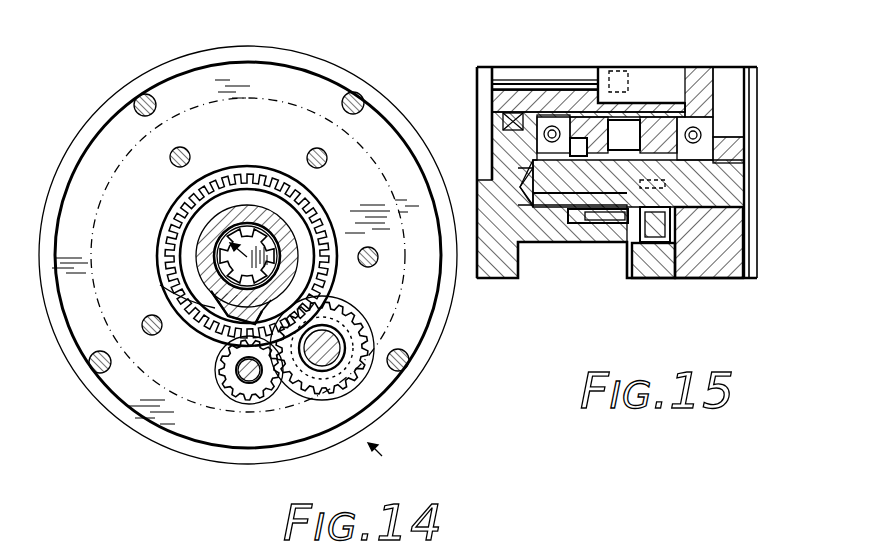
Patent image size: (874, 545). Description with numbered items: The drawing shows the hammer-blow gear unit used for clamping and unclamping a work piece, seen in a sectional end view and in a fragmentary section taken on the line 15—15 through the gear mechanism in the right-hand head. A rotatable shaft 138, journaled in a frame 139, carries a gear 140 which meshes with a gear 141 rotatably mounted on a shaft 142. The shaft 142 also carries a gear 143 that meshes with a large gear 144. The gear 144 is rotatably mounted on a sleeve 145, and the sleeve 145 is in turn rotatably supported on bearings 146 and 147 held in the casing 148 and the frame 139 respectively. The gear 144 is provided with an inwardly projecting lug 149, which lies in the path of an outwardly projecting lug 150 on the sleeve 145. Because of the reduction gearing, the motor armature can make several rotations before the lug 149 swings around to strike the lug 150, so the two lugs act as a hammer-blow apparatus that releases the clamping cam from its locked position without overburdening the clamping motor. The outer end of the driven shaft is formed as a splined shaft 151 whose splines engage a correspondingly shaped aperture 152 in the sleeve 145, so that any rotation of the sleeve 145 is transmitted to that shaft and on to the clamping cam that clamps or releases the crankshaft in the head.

In FIG. 14, the line 15— 15 is at (318, 355).
In FIG. 14, the rotatable shaft 138 is at (240, 378).
In FIG. 15, the frame 139 is at (717, 263).
In FIG. 14, the gear 140 is at (258, 392).
In FIG. 15, the gear 140 is at (637, 217).
In FIG. 14, the gear 141 is at (343, 312).
In FIG. 15, the gear 141 is at (657, 257).
In FIG. 14, the shaft 142 is at (323, 342).
In FIG. 15, the shaft 142 is at (720, 185).
In FIG. 14, the gear 143 is at (338, 372).
In FIG. 15, the gear 143 is at (600, 217).
In FIG. 14, the gear 144 is at (307, 195).
In FIG. 15, the gear 144 is at (595, 142).
In FIG. 14, the sleeve 145 is at (197, 243).
In FIG. 15, the sleeve 145 is at (700, 77).
In FIG. 14, the bearing 146 is at (182, 193).
In FIG. 15, the bearing 146 is at (550, 126).
In FIG. 15, the bearing 147 is at (715, 120).
In FIG. 14, the casing 148 is at (112, 133).
In FIG. 15, the casing 148 is at (498, 267).
In FIG. 14, the inwardly projecting lug 149 is at (170, 297).
In FIG. 15, the inwardly projecting lug 149 is at (622, 92).
In FIG. 14, the outwardly projecting lug 150 is at (216, 336).
In FIG. 15, the outwardly projecting lug 150 is at (658, 127).
In FIG. 14, the splined shaft 151 is at (245, 226).
In FIG. 14, the aperture 152 is at (253, 223).
In FIG. 15, the aperture 152 is at (520, 70).